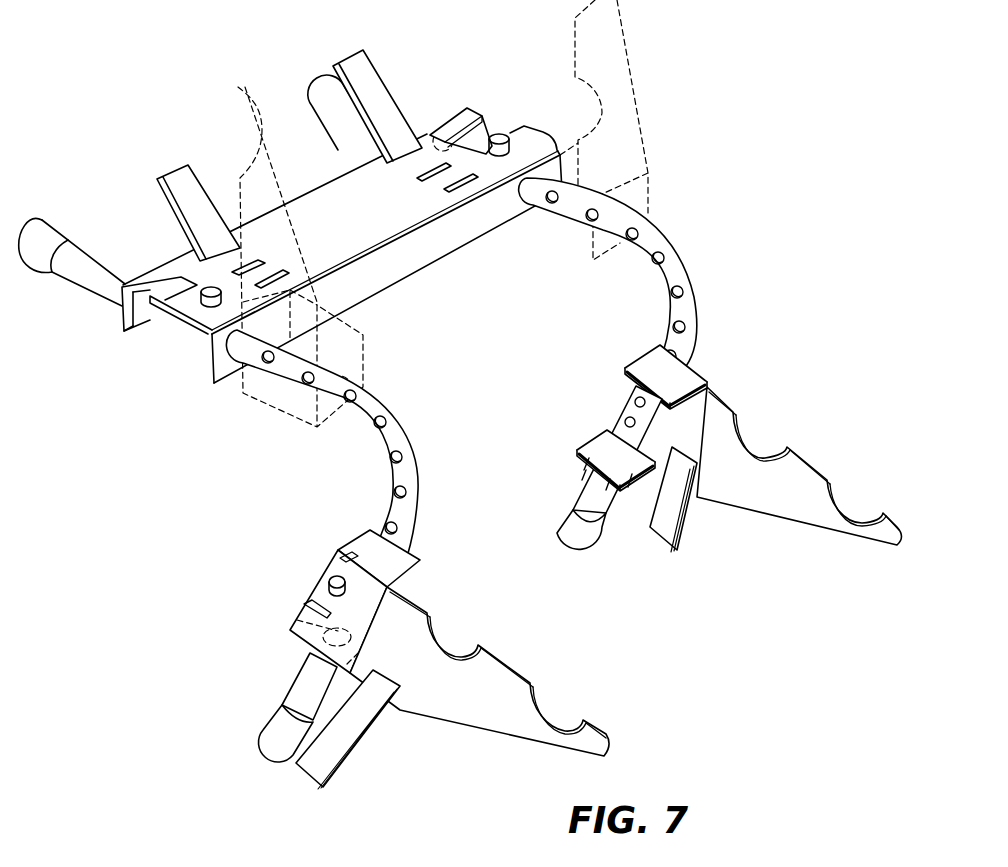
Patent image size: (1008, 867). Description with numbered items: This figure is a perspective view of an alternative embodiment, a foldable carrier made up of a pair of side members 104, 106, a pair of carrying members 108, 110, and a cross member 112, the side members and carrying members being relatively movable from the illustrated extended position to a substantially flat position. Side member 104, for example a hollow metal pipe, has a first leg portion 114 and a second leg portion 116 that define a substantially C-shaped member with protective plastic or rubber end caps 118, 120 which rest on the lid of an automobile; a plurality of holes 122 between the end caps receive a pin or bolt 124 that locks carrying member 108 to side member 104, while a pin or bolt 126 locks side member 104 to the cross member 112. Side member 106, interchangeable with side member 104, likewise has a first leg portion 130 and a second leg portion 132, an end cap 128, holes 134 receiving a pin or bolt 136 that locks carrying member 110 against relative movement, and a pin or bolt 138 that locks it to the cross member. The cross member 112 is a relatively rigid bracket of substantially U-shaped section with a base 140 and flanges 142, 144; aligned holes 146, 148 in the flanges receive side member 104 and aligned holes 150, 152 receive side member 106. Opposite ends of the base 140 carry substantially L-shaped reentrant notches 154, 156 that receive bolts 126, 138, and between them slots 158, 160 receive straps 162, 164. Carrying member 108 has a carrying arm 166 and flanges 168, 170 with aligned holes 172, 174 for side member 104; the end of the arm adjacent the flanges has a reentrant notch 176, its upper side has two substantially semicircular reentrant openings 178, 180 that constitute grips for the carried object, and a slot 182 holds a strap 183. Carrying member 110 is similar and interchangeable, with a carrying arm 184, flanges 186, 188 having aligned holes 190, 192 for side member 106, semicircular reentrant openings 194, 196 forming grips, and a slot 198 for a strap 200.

The side member 104 is at (375, 449).
The side member 106 is at (646, 260).
The carrying member 108 is at (528, 669).
The carrying member 110 is at (812, 462).
The cross member 112 is at (380, 292).
The first leg portion 114 is at (104, 266).
The second leg portion 116 is at (302, 672).
The end cap 118 is at (56, 226).
The end cap 120 is at (278, 743).
The holes 122 is at (382, 422).
The pin or bolt 124 is at (326, 587).
The pin or bolt 126 is at (314, 87).
The end cap 128 is at (578, 548).
The first leg portion 130 is at (413, 116).
The second leg portion 132 is at (590, 497).
The holes 134 is at (688, 291).
The pin or bolt 136 is at (630, 403).
The pin or bolt 138 is at (505, 137).
The base 140 is at (323, 177).
The flange 142 is at (120, 305).
The flange 144 is at (465, 245).
The hole 146 is at (125, 320).
The hole 148 is at (211, 366).
The hole 150 is at (441, 130).
The hole 152 is at (528, 205).
The reentrant notch 154 is at (180, 293).
The reentrant notch 156 is at (479, 133).
The slot 158 is at (276, 264).
The slot 160 is at (424, 176).
The strap 162 is at (157, 186).
The strap 164 is at (374, 74).
The carrying arm 166 is at (503, 730).
The flange 168 is at (418, 600).
The flange 170 is at (413, 557).
The hole 172 is at (300, 640).
The hole 174 is at (345, 563).
The reentrant notch 176 is at (302, 608).
The reentrant opening 178 is at (562, 720).
The reentrant opening 180 is at (455, 645).
The slot 182 is at (400, 683).
The strap 183 is at (340, 750).
The carrying arm 184 is at (810, 533).
The flange 186 is at (595, 452).
The flange 188 is at (708, 390).
The hole 190 is at (628, 477).
The hole 192 is at (690, 367).
The reentrant opening 194 is at (760, 443).
The reentrant opening 196 is at (850, 507).
The slot 198 is at (693, 468).
The strap 200 is at (688, 540).